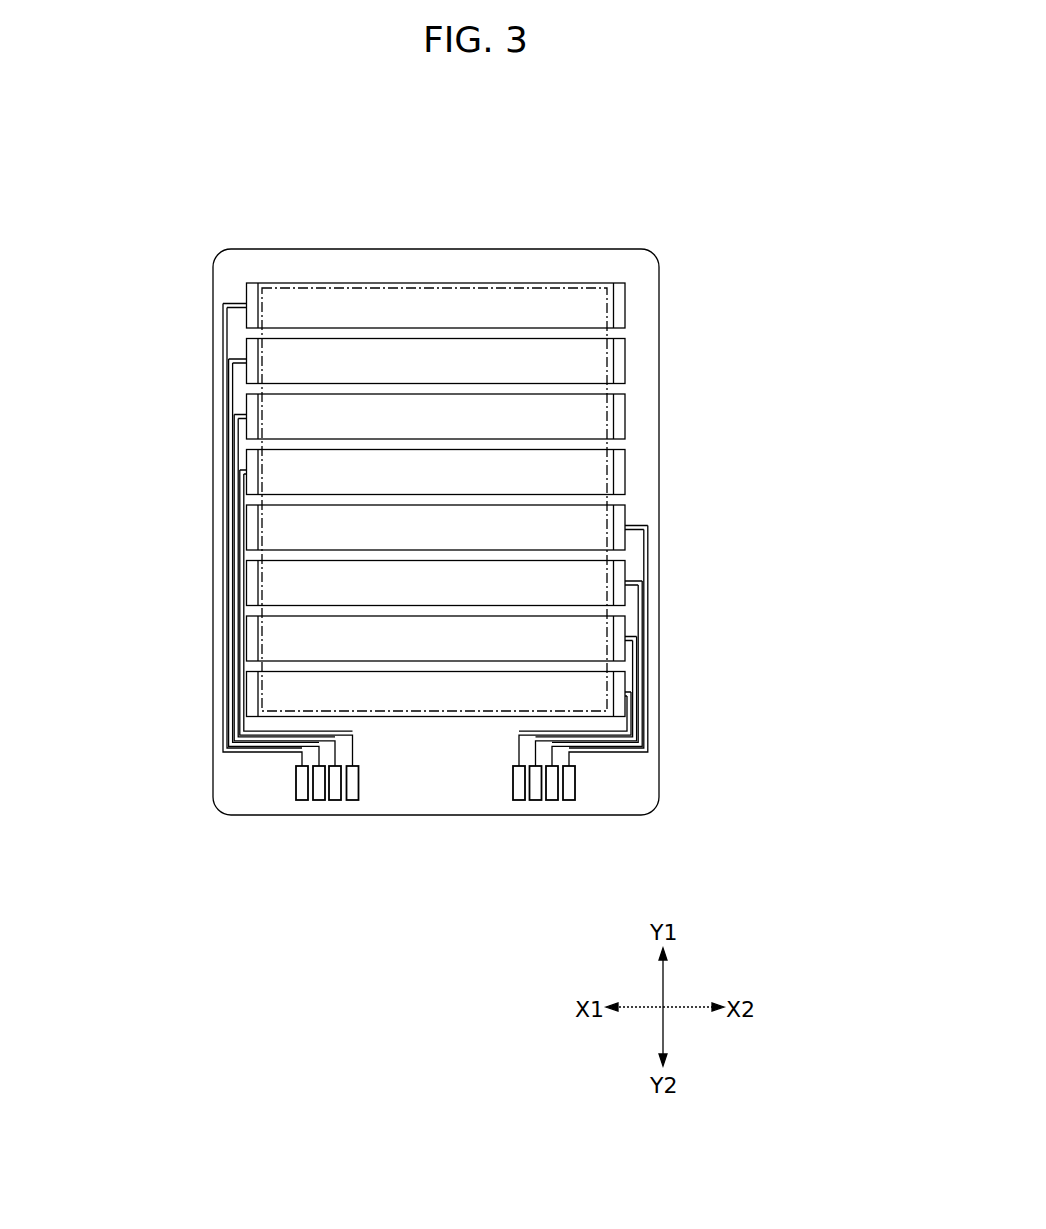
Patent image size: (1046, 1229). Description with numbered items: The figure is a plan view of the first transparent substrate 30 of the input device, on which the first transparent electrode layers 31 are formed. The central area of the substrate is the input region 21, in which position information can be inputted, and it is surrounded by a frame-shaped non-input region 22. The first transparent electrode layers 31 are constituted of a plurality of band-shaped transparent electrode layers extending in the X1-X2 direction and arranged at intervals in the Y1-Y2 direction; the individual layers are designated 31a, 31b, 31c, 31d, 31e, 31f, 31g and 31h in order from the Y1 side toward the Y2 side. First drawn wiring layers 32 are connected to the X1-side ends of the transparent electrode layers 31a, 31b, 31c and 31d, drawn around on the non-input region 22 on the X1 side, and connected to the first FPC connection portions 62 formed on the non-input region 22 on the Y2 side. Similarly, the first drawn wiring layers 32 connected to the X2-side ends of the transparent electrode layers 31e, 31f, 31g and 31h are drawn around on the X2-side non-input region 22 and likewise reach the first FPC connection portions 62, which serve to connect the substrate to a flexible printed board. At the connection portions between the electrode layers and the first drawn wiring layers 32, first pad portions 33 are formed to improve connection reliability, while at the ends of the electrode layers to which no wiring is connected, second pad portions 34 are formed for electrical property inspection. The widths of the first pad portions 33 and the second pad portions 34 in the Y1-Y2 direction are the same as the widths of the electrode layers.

The input region 21 is at (424, 312).
The non-input region 22 is at (375, 514).
The first transparent substrate 30 is at (544, 266).
The first transparent electrode layers 31 is at (442, 487).
The first transparent electrode layer 31a is at (568, 306).
The first transparent electrode layer 31b is at (550, 359).
The first transparent electrode layer 31c is at (550, 420).
The first transparent electrode layer 31d is at (550, 475).
The first transparent electrode layer 31e is at (568, 532).
The first transparent electrode layer 31f is at (568, 588).
The first transparent electrode layer 31g is at (568, 643).
The first transparent electrode layer 31h is at (568, 699).
The first drawn wiring layers 32 is at (235, 608).
The first pad portions 33 is at (250, 353).
The second pad portions 34 is at (635, 300).
The first FPC connection portions 62 is at (518, 798).